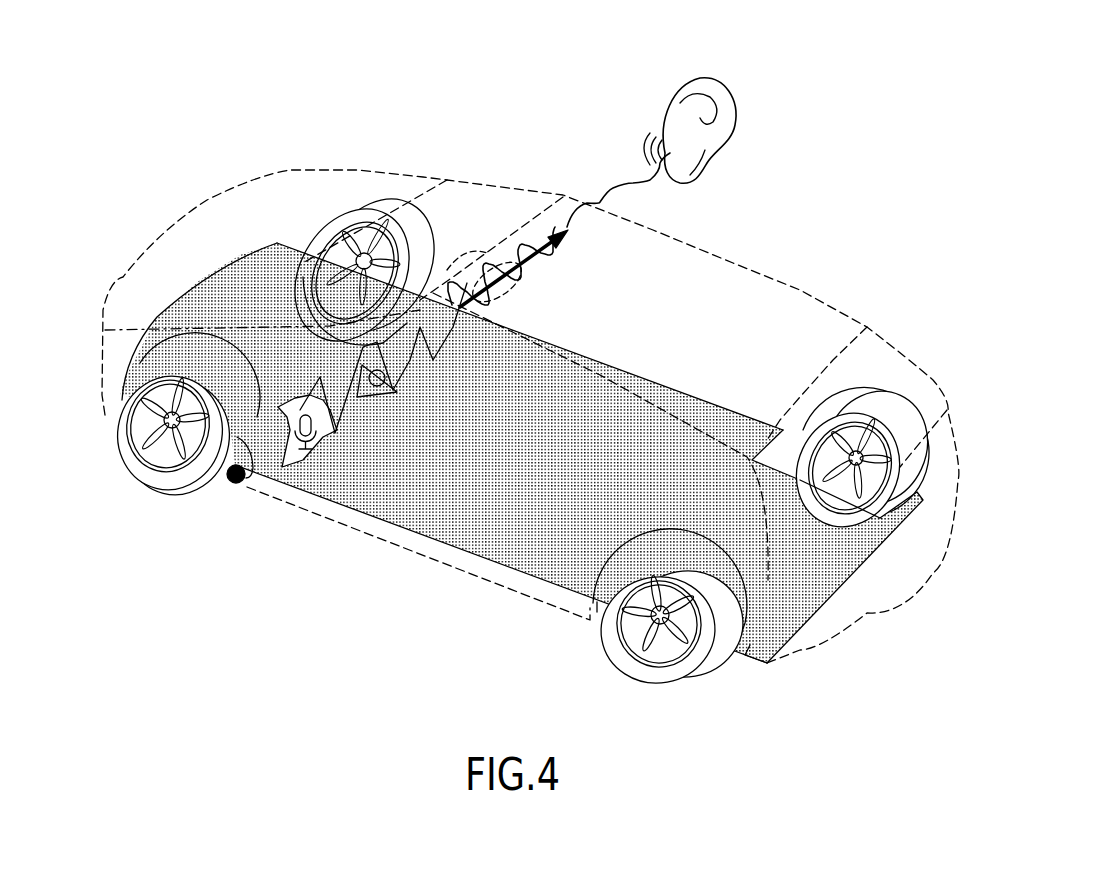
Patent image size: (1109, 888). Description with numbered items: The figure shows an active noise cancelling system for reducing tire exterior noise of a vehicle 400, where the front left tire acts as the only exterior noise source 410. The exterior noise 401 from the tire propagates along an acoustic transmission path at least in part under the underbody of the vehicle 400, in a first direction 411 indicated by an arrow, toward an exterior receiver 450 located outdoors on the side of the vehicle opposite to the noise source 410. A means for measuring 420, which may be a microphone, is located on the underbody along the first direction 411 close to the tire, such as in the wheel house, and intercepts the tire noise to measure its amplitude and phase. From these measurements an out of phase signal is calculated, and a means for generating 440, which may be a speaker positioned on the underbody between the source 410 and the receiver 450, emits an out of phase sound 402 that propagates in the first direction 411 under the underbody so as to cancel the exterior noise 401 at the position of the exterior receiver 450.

The vehicle 400 is at (847, 122).
The exterior noise 401 is at (225, 308).
The out of phase sound 402 is at (470, 282).
The exterior noise source 410 is at (236, 478).
The first direction 411 is at (567, 258).
The means for measuring 420 is at (322, 445).
The means for generating 440 is at (397, 393).
The exterior receiver 450 is at (693, 110).